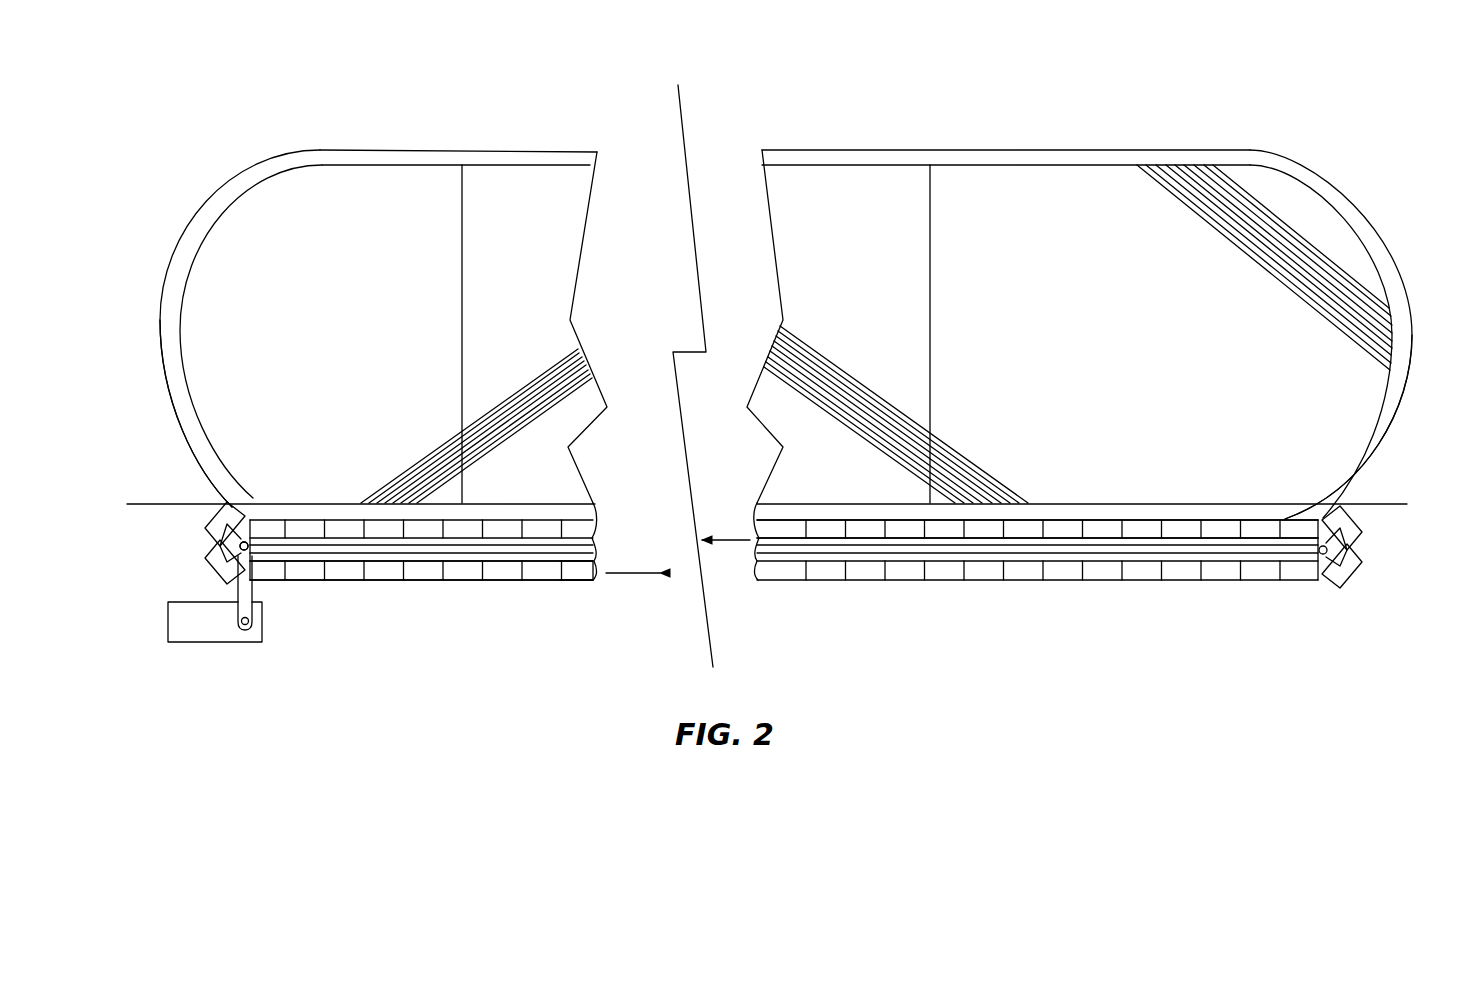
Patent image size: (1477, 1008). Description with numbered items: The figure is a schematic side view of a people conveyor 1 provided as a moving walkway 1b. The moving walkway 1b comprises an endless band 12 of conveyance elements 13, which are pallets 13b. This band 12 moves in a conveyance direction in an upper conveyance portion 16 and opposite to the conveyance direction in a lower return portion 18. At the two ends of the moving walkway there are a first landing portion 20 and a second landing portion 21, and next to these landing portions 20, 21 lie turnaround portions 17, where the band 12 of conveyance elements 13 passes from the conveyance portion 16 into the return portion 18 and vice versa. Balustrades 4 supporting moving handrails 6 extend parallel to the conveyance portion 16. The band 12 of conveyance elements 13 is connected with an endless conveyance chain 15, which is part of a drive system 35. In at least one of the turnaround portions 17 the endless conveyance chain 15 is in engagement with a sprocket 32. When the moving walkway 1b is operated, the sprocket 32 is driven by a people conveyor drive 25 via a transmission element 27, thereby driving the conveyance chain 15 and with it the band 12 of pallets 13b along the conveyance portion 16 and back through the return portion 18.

The people conveyor 1 is at (203, 170).
The moving walkway 1b is at (357, 314).
The balustrade 4 is at (485, 210).
The moving handrail 6 is at (1265, 152).
The endless band 12 is at (980, 620).
The conveyance element 13 is at (394, 574).
The pallet 13b is at (421, 613).
The endless conveyance chain 15 is at (597, 550).
The upper conveyance portion 16 is at (1107, 510).
The turnaround portion 17 is at (183, 543).
The lower return portion 18 is at (1085, 642).
The first landing portion 20 is at (180, 485).
The second landing portion 21 is at (1388, 485).
The people conveyor drive 25 is at (178, 650).
The transmission element 27 is at (225, 590).
The sprocket 32 is at (246, 544).
The drive system 35 is at (607, 567).